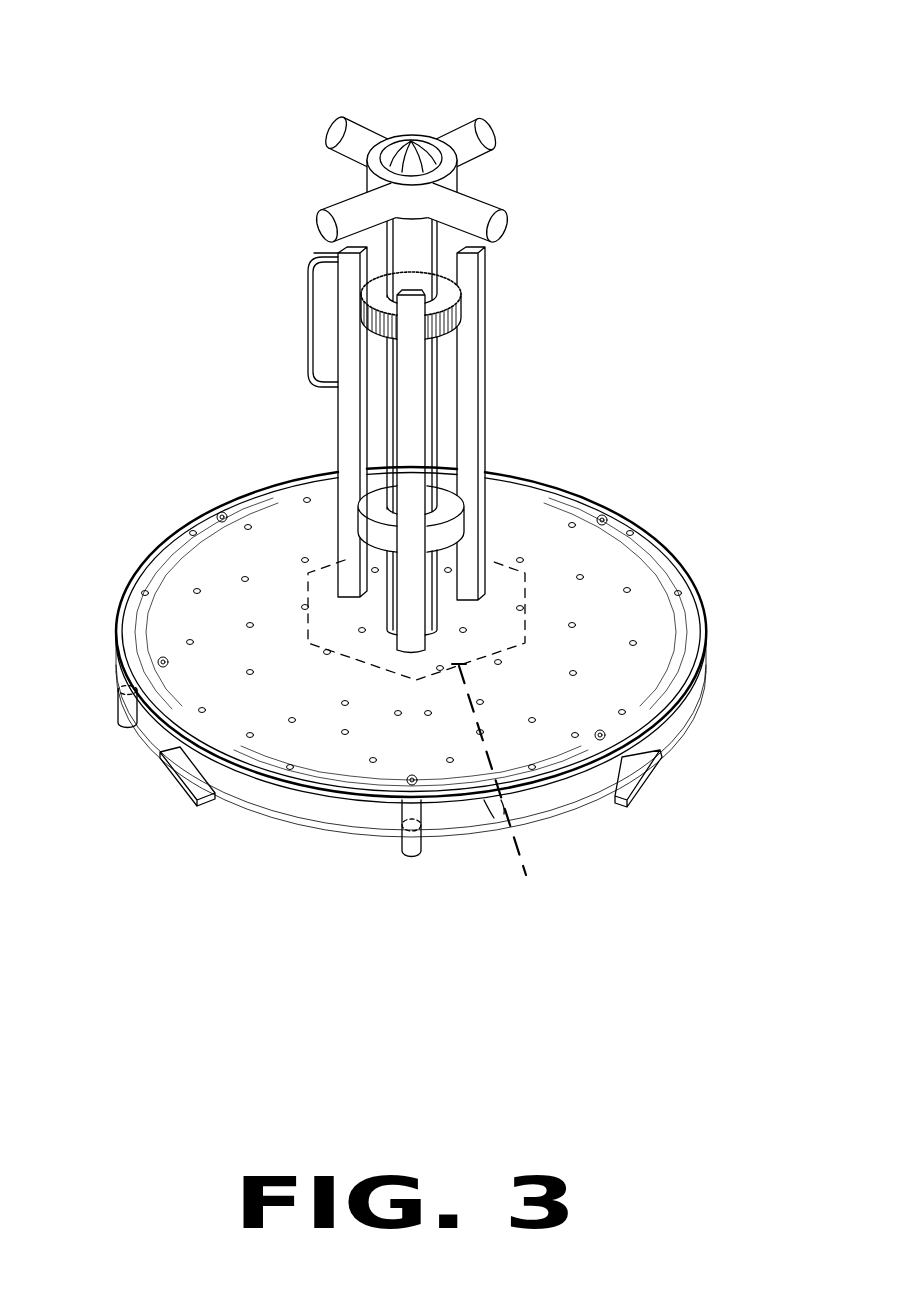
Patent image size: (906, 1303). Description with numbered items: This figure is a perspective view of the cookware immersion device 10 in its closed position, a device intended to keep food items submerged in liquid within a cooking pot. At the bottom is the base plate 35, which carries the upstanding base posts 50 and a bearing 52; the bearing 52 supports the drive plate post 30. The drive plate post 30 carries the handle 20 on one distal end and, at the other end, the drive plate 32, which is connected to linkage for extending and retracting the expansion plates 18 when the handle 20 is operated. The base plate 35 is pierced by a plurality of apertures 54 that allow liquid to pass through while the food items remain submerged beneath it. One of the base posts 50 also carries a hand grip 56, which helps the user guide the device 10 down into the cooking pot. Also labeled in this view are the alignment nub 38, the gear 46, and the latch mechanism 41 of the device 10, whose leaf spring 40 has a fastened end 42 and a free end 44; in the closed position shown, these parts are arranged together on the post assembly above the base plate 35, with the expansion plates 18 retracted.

The cookware immersion device 10 is at (230, 194).
The expansion plate 18 is at (733, 835).
The handle 20 is at (412, 143).
The drive plate post 30 is at (415, 240).
The drive plate 32 is at (501, 791).
The base plate 35 is at (125, 620).
The alignment nub 38 is at (412, 855).
The leaf spring 40 is at (447, 332).
The latch mechanism 41 is at (486, 328).
The fastened end of leaf spring 42 is at (485, 294).
The free end of leaf spring 44 is at (437, 340).
The gear 46 is at (385, 362).
The base post 50 is at (475, 442).
The bearing 52 is at (452, 512).
The aperture in base plate 54 is at (627, 590).
The hand grip 56 is at (306, 322).